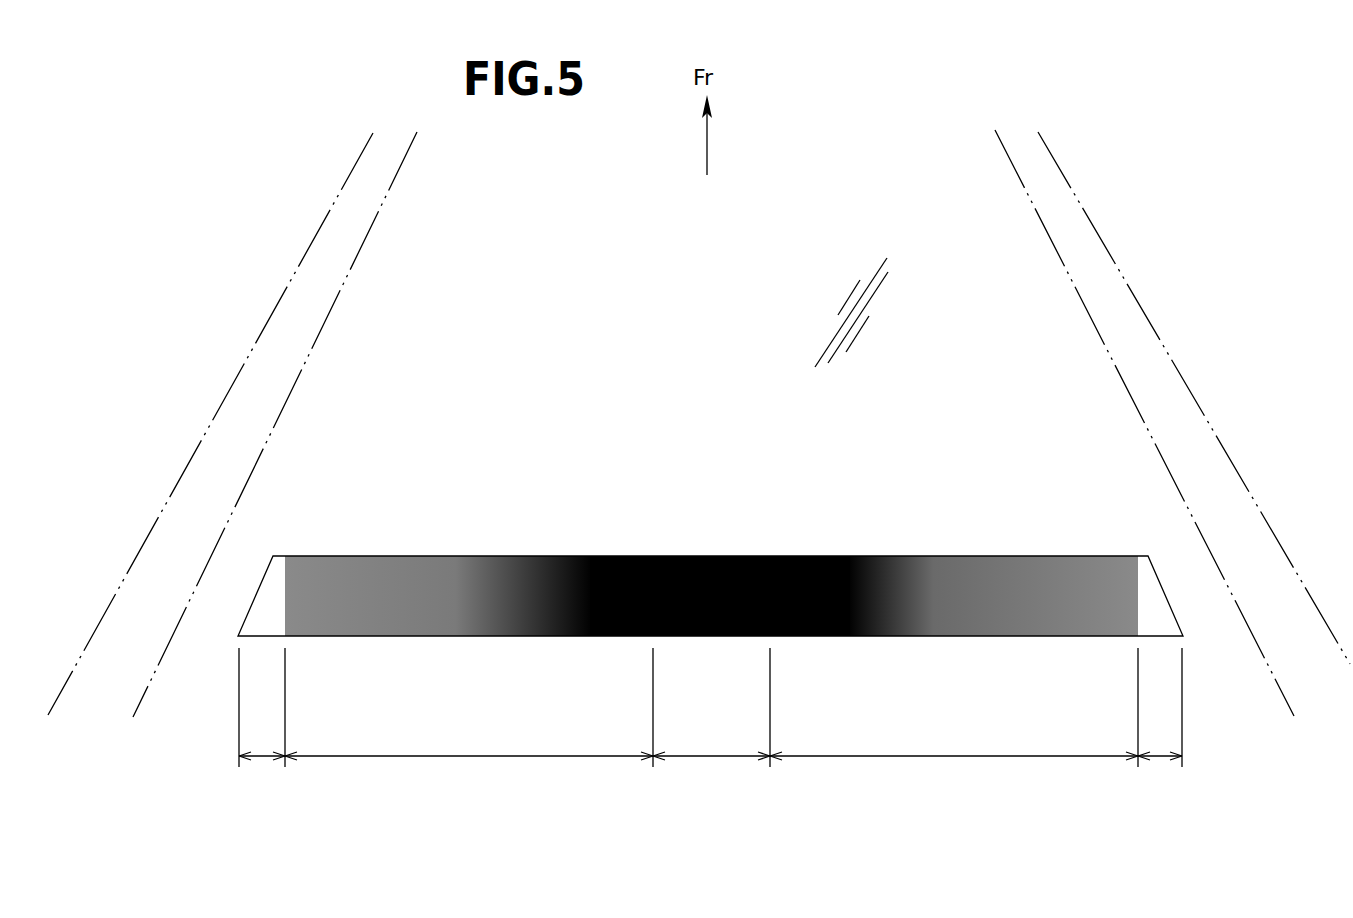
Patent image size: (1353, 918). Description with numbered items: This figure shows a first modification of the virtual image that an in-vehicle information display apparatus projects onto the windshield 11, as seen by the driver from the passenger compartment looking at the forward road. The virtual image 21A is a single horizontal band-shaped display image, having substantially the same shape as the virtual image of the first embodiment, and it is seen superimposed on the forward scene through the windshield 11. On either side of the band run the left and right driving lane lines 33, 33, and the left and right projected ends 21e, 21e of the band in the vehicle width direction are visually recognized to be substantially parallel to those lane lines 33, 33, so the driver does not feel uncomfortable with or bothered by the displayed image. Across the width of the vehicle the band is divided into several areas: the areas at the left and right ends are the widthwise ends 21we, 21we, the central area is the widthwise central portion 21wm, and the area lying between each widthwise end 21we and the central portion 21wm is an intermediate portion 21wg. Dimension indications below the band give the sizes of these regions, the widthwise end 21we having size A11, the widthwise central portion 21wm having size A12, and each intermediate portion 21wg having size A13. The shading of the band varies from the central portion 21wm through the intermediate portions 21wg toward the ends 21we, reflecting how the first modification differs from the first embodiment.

The driving lane line 33 is at (307, 247).
The windshield 11 is at (902, 321).
The virtual image 21A is at (594, 553).
The projected end 21e is at (257, 596).
The widthwise end 21we is at (263, 597).
The intermediate portion 21wg is at (441, 598).
The widthwise central portion 21wm is at (678, 596).
The size of widthwise end A11 is at (711, 721).
The size of widthwise central portion A12 is at (711, 773).
The size of intermediate portion A13 is at (711, 721).